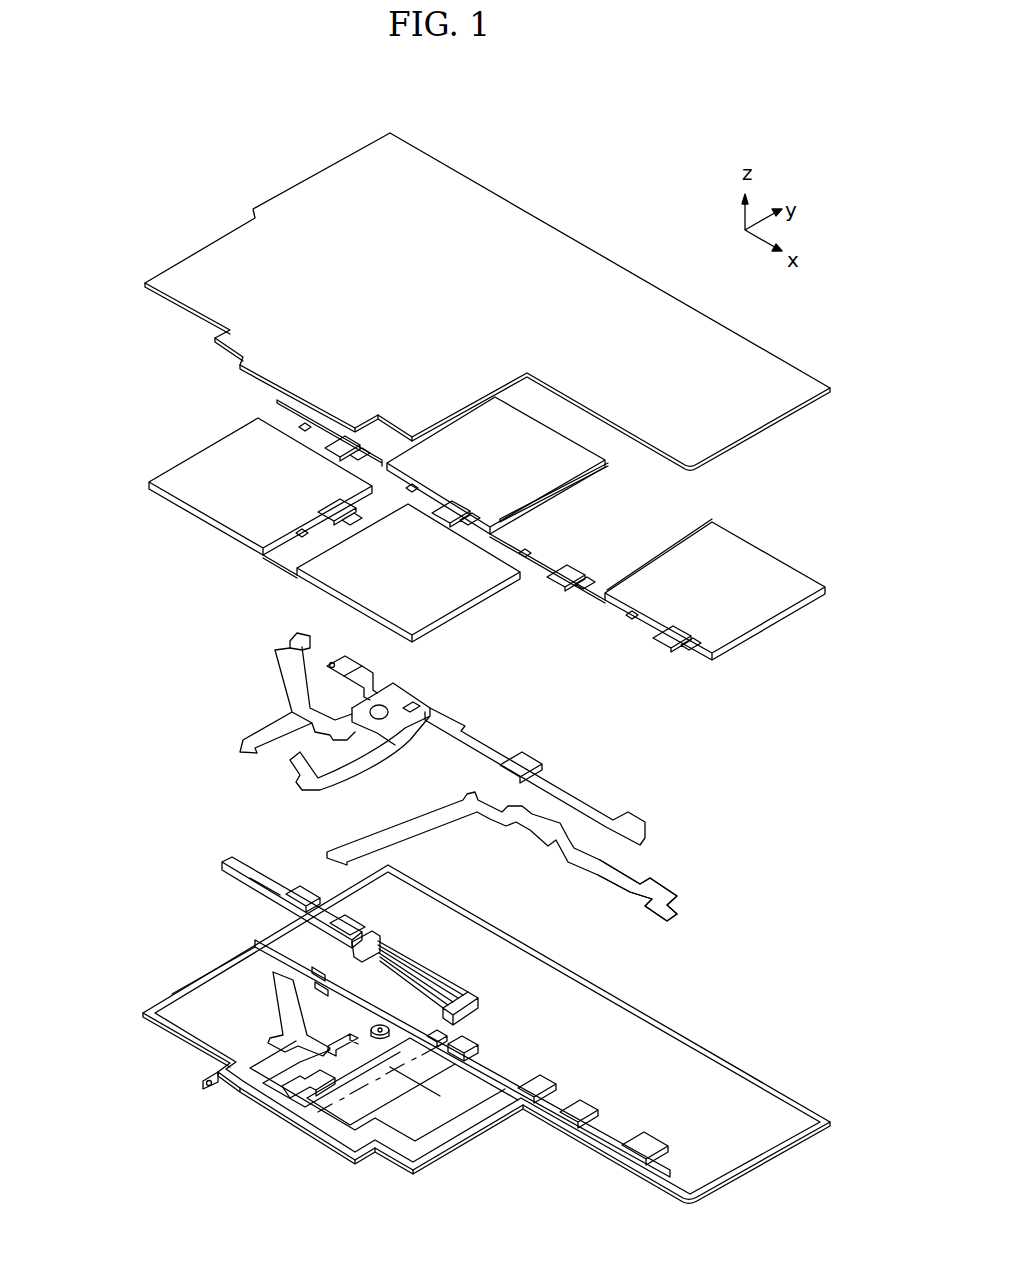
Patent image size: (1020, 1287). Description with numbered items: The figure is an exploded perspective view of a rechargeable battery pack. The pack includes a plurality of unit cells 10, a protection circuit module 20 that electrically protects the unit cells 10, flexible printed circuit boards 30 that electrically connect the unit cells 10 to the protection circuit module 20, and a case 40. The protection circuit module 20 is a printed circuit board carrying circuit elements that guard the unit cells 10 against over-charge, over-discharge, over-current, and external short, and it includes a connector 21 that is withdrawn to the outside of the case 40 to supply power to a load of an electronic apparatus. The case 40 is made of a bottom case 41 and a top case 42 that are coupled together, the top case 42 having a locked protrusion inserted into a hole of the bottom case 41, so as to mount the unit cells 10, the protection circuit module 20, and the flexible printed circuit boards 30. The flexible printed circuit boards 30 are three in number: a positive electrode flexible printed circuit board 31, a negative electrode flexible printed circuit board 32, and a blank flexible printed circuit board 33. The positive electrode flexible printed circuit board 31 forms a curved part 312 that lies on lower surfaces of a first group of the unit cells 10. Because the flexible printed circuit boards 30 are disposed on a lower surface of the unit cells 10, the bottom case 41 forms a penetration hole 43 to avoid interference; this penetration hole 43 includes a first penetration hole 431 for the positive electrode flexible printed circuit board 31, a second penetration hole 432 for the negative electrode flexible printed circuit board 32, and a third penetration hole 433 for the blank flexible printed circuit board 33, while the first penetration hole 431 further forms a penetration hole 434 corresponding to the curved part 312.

The unit cells 10 is at (750, 545).
The protection circuit module 20 is at (248, 880).
The connector 21 is at (473, 998).
The flexible printed circuit boards 30 is at (473, 777).
The positive electrode flexible printed circuit board 31 is at (516, 806).
The curved part 312 is at (647, 883).
The negative electrode flexible printed circuit board 32 is at (292, 663).
The blank flexible printed circuit board 33 is at (403, 737).
The case 40 is at (86, 604).
The bottom case 41 is at (461, 980).
The top case 42 is at (175, 302).
The penetration hole 43 is at (340, 1126).
The first penetration hole 431 is at (395, 1103).
The second penetration hole 432 is at (246, 1090).
The third penetration hole 433 is at (372, 1085).
The penetration hole 434 is at (640, 1150).